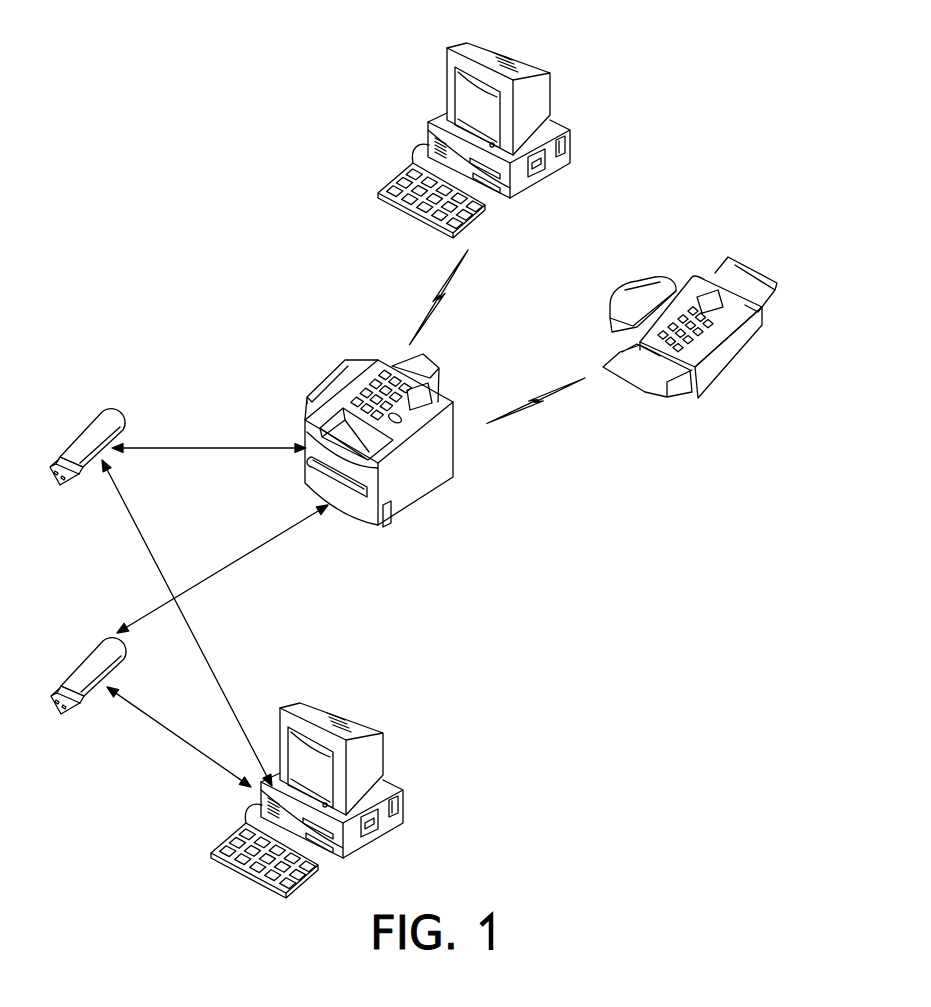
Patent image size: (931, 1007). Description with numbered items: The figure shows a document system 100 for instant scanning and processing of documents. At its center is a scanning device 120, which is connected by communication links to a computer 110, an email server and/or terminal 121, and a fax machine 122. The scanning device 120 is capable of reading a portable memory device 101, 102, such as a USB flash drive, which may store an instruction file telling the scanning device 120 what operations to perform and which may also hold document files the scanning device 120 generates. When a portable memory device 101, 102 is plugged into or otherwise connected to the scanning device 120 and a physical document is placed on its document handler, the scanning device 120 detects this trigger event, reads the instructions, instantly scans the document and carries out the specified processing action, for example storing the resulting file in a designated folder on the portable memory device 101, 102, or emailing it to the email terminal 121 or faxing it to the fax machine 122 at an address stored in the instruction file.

The document system 100 is at (188, 133).
The portable memory device 101 is at (82, 660).
The portable memory device 102 is at (75, 433).
The computer 110 is at (385, 742).
The scanning device 120 is at (322, 384).
The email server and/or terminal 121 is at (552, 80).
The fax machine 122 is at (645, 278).